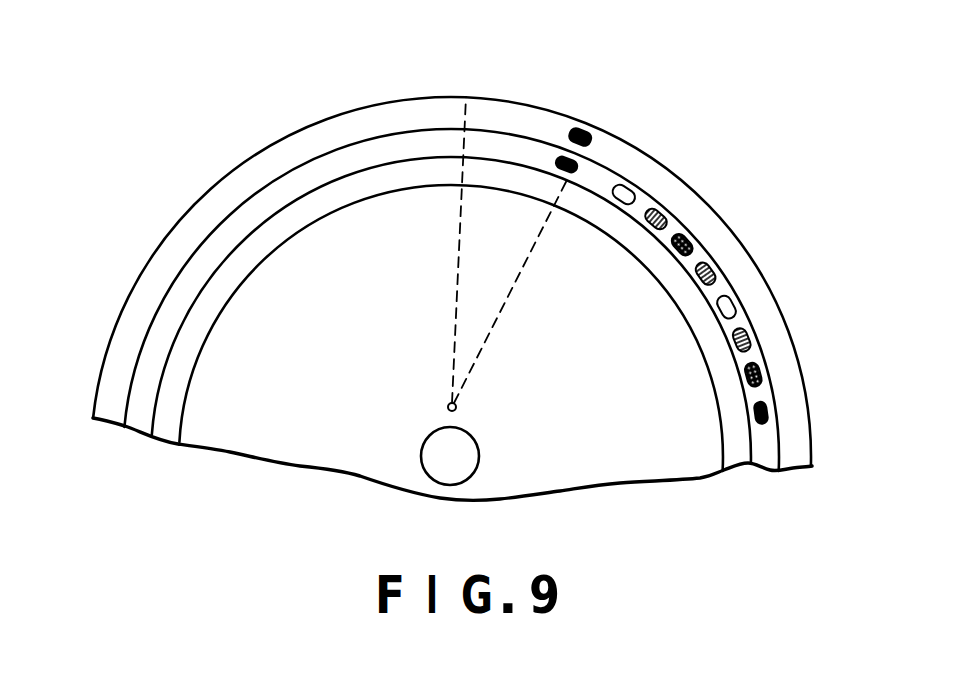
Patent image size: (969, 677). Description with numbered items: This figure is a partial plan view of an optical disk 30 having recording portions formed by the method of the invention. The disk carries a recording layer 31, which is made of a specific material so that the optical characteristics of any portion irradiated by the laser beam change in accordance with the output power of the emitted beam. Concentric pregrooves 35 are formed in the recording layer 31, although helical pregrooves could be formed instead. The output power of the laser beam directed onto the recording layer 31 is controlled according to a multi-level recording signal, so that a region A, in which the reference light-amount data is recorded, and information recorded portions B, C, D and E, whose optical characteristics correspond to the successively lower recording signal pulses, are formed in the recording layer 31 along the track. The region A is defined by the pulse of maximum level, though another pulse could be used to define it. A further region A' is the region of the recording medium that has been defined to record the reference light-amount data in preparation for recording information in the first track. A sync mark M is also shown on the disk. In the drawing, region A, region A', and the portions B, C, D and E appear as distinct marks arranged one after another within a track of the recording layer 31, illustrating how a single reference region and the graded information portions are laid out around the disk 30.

The optical disk 30 is at (314, 98).
The recording layer 31 is at (437, 96).
The pregrooves 35 is at (380, 135).
The sync mark M is at (447, 407).
The region in which reference light-amount data is recorded A is at (567, 209).
The region for recording reference light-amount data for the first track A' is at (589, 100).
The information recorded portion B is at (768, 412).
The information recorded portion C is at (686, 243).
The information recorded portion D is at (663, 213).
The information recorded portion E is at (632, 188).